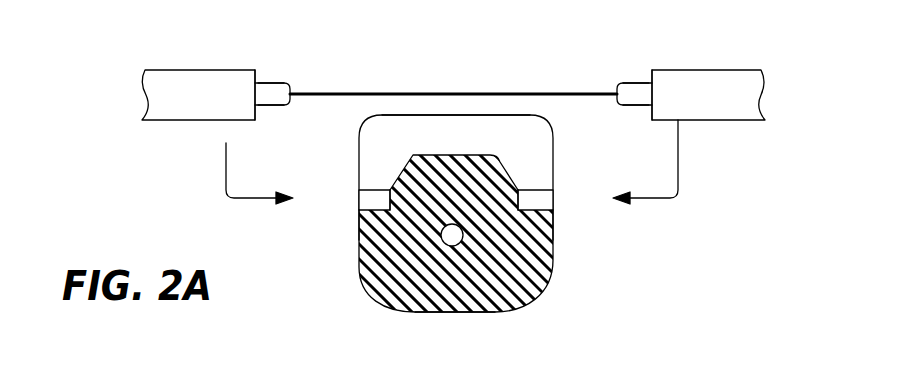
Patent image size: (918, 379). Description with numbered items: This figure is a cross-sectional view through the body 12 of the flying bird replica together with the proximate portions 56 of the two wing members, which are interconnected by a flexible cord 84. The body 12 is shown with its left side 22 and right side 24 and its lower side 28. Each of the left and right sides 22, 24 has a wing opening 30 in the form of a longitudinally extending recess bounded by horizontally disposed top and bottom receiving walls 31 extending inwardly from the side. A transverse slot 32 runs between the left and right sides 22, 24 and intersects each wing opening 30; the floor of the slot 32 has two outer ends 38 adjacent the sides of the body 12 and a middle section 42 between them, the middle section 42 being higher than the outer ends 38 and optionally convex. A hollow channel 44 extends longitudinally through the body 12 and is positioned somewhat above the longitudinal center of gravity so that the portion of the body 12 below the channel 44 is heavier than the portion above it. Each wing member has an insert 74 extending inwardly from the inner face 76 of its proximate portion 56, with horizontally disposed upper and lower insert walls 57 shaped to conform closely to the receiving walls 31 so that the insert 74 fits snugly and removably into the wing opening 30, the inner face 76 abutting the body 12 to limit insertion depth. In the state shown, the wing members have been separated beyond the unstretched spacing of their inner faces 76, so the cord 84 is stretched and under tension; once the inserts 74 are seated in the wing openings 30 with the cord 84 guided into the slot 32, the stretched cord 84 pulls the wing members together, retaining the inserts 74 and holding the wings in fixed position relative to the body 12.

The body 12 is at (450, 207).
The left side 22 is at (556, 250).
The right side 24 is at (358, 250).
The lower side 28 is at (452, 314).
The wing opening 30 is at (358, 192).
The receiving walls 31 is at (386, 194).
The transverse slot 32 is at (495, 125).
The outer ends 38 is at (358, 228).
The middle section 42 is at (402, 148).
The hollow channel 44 is at (437, 236).
The proximate portion 56 is at (202, 70).
The insert walls 57 is at (266, 82).
The insert 74 is at (263, 106).
The inner face 76 is at (261, 72).
The flexible cord 84 is at (442, 93).